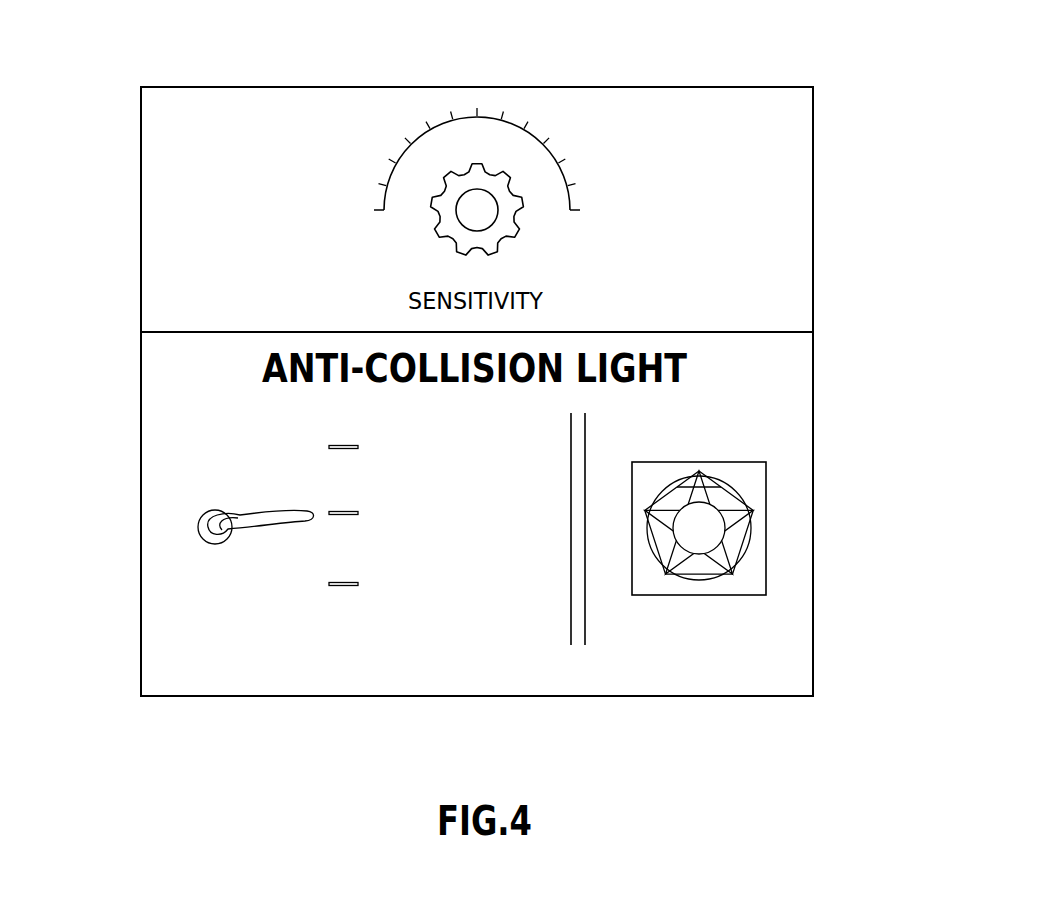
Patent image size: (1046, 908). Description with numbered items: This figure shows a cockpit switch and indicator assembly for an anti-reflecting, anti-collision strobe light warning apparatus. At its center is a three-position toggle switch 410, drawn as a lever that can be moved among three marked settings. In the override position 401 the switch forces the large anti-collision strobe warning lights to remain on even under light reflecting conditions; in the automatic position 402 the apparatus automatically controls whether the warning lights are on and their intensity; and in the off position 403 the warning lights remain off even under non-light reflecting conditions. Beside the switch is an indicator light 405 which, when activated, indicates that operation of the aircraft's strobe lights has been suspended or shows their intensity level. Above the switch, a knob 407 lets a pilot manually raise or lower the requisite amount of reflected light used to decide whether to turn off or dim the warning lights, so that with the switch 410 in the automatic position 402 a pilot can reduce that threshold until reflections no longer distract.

The override position 401 is at (373, 433).
The automatic position 402 is at (377, 502).
The off position 403 is at (327, 585).
The indicator light 405 is at (743, 506).
The knob 407 is at (503, 172).
The three-position toggle switch 410 is at (208, 519).